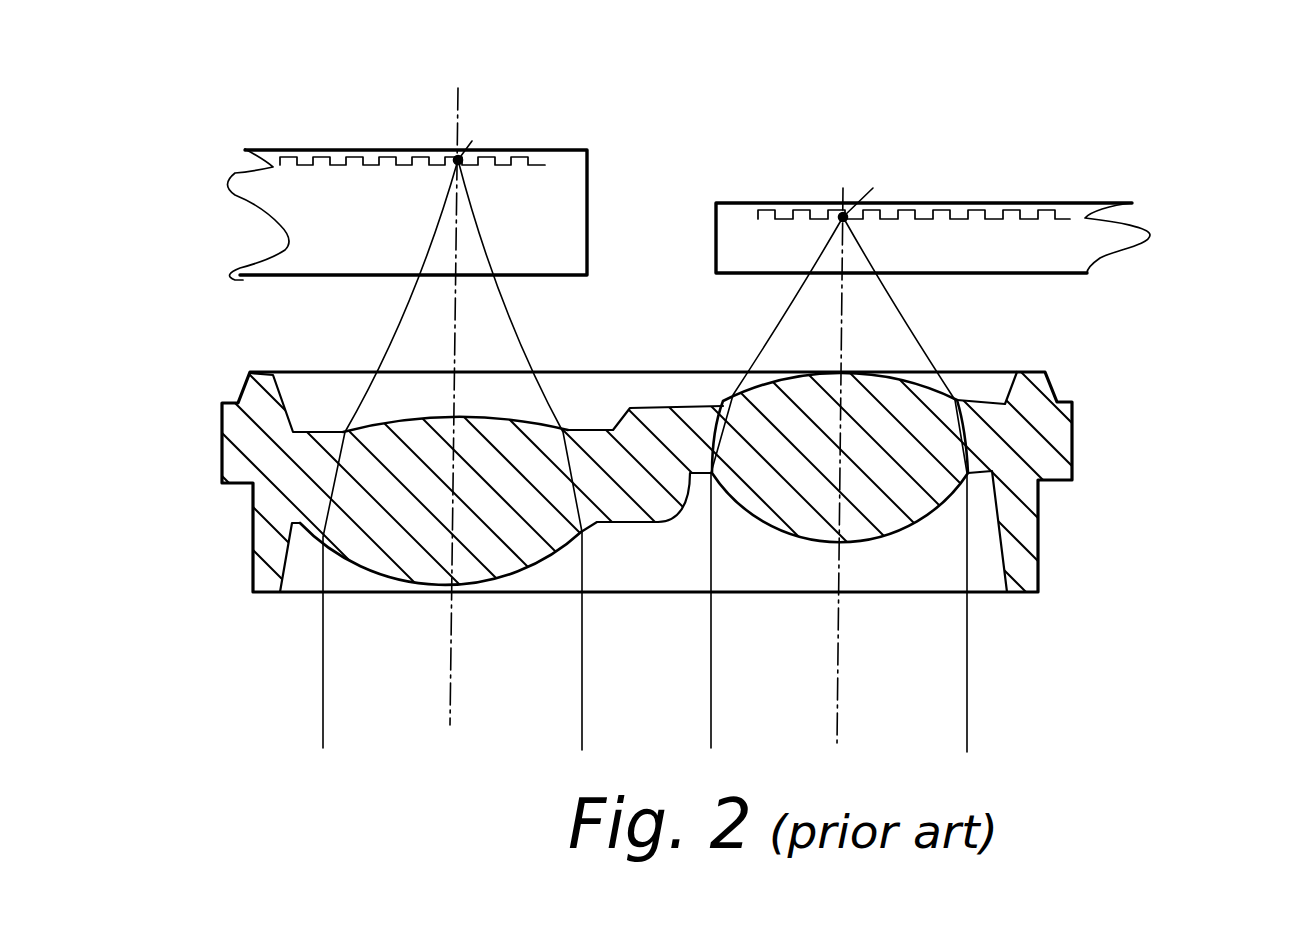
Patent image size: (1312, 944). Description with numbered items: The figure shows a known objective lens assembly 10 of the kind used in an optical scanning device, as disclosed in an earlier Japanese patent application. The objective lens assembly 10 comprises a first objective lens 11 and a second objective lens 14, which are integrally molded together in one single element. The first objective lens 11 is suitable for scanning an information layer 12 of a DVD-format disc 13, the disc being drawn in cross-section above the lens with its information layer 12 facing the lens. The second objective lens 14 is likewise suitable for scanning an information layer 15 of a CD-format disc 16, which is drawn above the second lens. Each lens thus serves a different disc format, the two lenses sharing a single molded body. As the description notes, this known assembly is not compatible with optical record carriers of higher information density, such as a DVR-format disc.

The objective lens assembly 10 is at (1160, 609).
The first objective lens 11 is at (875, 505).
The information layer 12 is at (1025, 208).
The DVD-format disc 13 is at (1040, 244).
The second objective lens 14 is at (487, 527).
The information layer 15 is at (385, 150).
The CD-format disc 16 is at (303, 212).